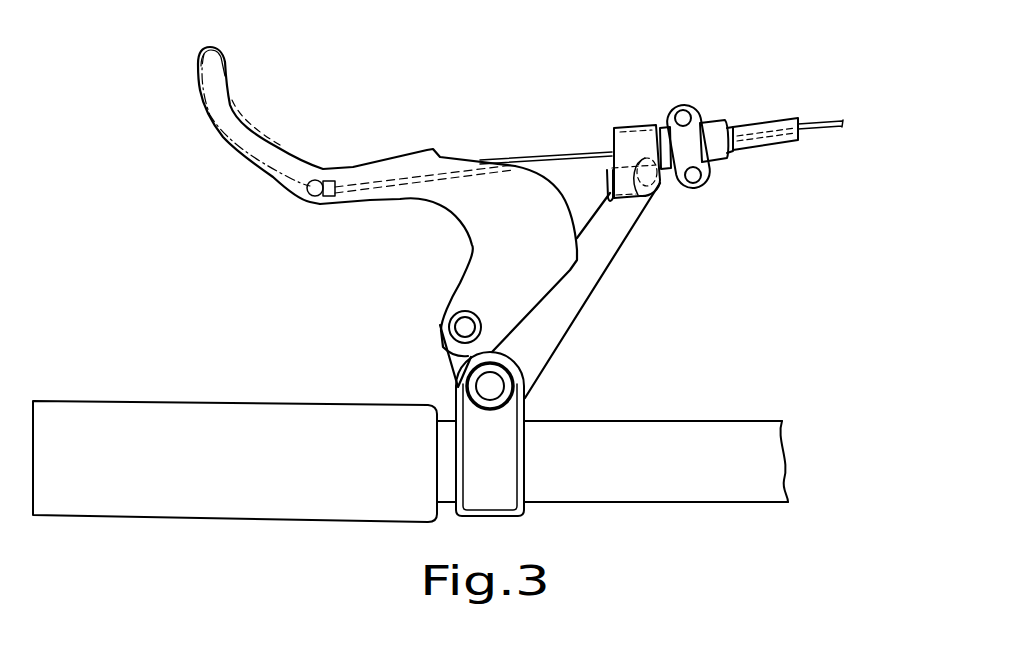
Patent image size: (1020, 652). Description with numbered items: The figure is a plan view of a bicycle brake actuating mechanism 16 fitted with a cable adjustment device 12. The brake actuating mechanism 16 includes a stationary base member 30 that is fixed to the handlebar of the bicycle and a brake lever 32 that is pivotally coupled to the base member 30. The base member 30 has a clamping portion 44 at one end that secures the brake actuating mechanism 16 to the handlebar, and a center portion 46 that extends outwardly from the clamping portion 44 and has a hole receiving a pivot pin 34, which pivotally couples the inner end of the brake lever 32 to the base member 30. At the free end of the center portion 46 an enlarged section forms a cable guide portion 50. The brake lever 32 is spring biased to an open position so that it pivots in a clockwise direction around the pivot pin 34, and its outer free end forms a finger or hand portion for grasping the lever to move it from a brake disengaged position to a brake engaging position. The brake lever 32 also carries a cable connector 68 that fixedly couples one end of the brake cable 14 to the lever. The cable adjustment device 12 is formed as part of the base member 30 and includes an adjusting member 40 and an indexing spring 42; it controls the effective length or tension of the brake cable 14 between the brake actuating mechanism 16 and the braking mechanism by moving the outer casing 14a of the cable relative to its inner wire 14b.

The cable adjustment device 12 is at (661, 123).
The brake cable 14 is at (661, 138).
The outer casing 14a is at (762, 117).
The inner wire 14b is at (552, 157).
The brake actuating mechanism 16 is at (387, 203).
The base member 30 is at (605, 290).
The brake lever 32 is at (272, 126).
The pivot pin 34 is at (455, 330).
The adjusting member 40 is at (707, 110).
The indexing spring 42 is at (642, 158).
The clamping portion 44 is at (524, 488).
The center portion 46 is at (594, 265).
The cable guide portion 50 is at (633, 122).
The cable connector 68 is at (327, 195).